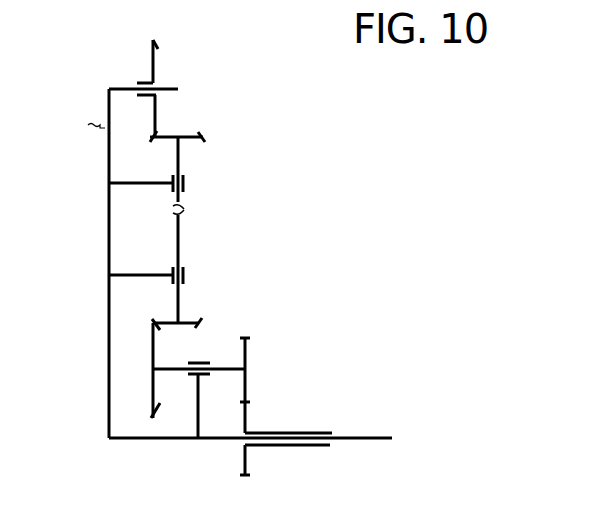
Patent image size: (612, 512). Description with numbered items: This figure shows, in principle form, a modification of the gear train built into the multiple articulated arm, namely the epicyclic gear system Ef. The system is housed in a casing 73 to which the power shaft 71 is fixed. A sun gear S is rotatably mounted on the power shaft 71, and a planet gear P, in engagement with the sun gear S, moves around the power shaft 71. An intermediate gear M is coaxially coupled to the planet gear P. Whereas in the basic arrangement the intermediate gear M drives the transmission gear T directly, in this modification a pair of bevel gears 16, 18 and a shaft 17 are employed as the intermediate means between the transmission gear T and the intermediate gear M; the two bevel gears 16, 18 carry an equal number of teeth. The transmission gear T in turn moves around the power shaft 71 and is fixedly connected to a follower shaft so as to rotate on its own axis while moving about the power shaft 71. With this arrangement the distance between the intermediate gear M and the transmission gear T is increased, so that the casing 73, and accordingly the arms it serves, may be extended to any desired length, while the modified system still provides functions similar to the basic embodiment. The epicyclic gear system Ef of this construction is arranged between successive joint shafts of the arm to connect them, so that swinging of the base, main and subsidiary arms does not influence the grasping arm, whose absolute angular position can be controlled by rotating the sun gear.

The casing 73 is at (109, 224).
The power shaft 71 is at (368, 437).
The transmission gear T is at (156, 58).
The bevel gear 18 is at (190, 136).
The shaft 17 is at (180, 236).
The bevel gear 16 is at (190, 322).
The intermediate gear M is at (153, 393).
The epicyclic gear system Ef is at (213, 349).
The planet gear P is at (247, 390).
The sun gear S is at (248, 457).